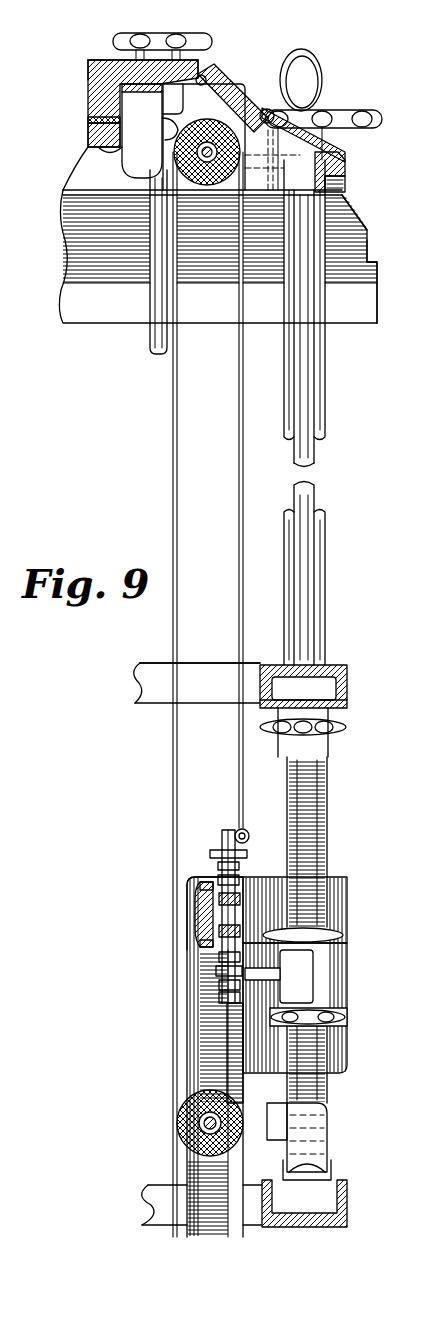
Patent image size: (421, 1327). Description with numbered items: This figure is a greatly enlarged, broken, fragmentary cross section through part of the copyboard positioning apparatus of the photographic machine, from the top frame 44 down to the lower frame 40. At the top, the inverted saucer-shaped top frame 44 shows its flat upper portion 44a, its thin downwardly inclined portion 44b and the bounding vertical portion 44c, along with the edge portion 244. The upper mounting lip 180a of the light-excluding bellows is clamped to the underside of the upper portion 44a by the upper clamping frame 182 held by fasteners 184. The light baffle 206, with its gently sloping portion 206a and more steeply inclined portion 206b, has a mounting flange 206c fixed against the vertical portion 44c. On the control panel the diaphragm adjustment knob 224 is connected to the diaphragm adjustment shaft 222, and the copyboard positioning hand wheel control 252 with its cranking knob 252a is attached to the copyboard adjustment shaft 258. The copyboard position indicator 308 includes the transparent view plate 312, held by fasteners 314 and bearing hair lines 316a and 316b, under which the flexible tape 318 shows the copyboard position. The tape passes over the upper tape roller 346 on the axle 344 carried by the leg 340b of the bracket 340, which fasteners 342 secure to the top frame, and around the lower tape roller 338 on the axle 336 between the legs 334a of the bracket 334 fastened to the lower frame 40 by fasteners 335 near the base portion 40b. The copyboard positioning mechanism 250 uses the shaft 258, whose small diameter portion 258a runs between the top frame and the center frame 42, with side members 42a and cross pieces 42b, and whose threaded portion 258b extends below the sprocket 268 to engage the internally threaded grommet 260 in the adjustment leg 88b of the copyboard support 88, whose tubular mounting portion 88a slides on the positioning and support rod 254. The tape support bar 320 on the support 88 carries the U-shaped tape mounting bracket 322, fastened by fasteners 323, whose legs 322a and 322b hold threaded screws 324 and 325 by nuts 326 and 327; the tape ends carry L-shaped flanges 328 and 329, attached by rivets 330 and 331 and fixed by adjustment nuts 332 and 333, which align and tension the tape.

The diaphragm adjustment knob 224 is at (134, 33).
The downwardly inclined portion 44b is at (197, 58).
The transparent view plate 312 is at (212, 70).
The hair line 316a is at (266, 108).
The fasteners 314 is at (270, 110).
The cranking knob 252a is at (306, 58).
The copyboard positioning hand wheel control 252 is at (348, 112).
The plate top edge 244 is at (105, 58).
The upper portion 44a is at (100, 60).
The top frame 44 is at (90, 72).
The fasteners 342 is at (122, 100).
The upper mounting lip 180a is at (88, 120).
The upper clamping frame 182 is at (90, 131).
The fasteners 184 is at (100, 150).
The bracket 340 is at (85, 160).
The leg 340b is at (138, 166).
The axle 344 is at (168, 124).
The upper tape roller 346 is at (174, 152).
The hair line 316b is at (204, 137).
The vertical portion 44c is at (347, 163).
The mounting flange 206c is at (347, 179).
The gently inclined sloping portion 206a is at (350, 212).
The light baffle 206 is at (88, 310).
The steeply inclined portion 206b is at (338, 315).
The diaphragm adjustment shaft 222 is at (150, 343).
The flexible tape 318 is at (172, 409).
The copyboard adjustment shaft 258 is at (309, 380).
The positioning and support rod 254 is at (325, 426).
The small diameter portion 258a is at (315, 460).
The copyboard positioning mechanism 250 is at (380, 560).
The side members 42a is at (137, 663).
The center frame 42 is at (132, 685).
The cross pieces 42b is at (349, 690).
The sprocket 268 is at (348, 728).
The threaded portion 258b is at (330, 775).
The copyboard position indicator 308 is at (120, 817).
The threaded screw 324 is at (232, 828).
The L-shaped flange 328 is at (244, 826).
The adjustment nut 332 is at (220, 850).
The rivet 330 is at (272, 820).
The nut 326 is at (237, 878).
The leg 322a is at (203, 880).
The tape mounting bracket 322 is at (190, 890).
The fasteners 323 is at (218, 898).
The tape support bar 320 is at (203, 930).
The leg 322b is at (203, 945).
The nut 327 is at (217, 959).
The L-shaped flange 329 is at (216, 972).
The adjustment nut 333 is at (218, 986).
The threaded screw 325 is at (222, 998).
The rivet 331 is at (245, 998).
The tubular mounting portion 88a is at (348, 913).
The adjustment leg 88b is at (348, 967).
The internally threaded grommet 260 is at (348, 1018).
The lower tape roller 338 is at (193, 1098).
The axle 336 is at (197, 1123).
The leg 334a is at (322, 1110).
The bracket 334 is at (326, 1128).
The fasteners 335 is at (312, 1163).
The copyboard support 88 is at (195, 1166).
The lower frame 40 is at (148, 1208).
The base cup 40b is at (348, 1210).